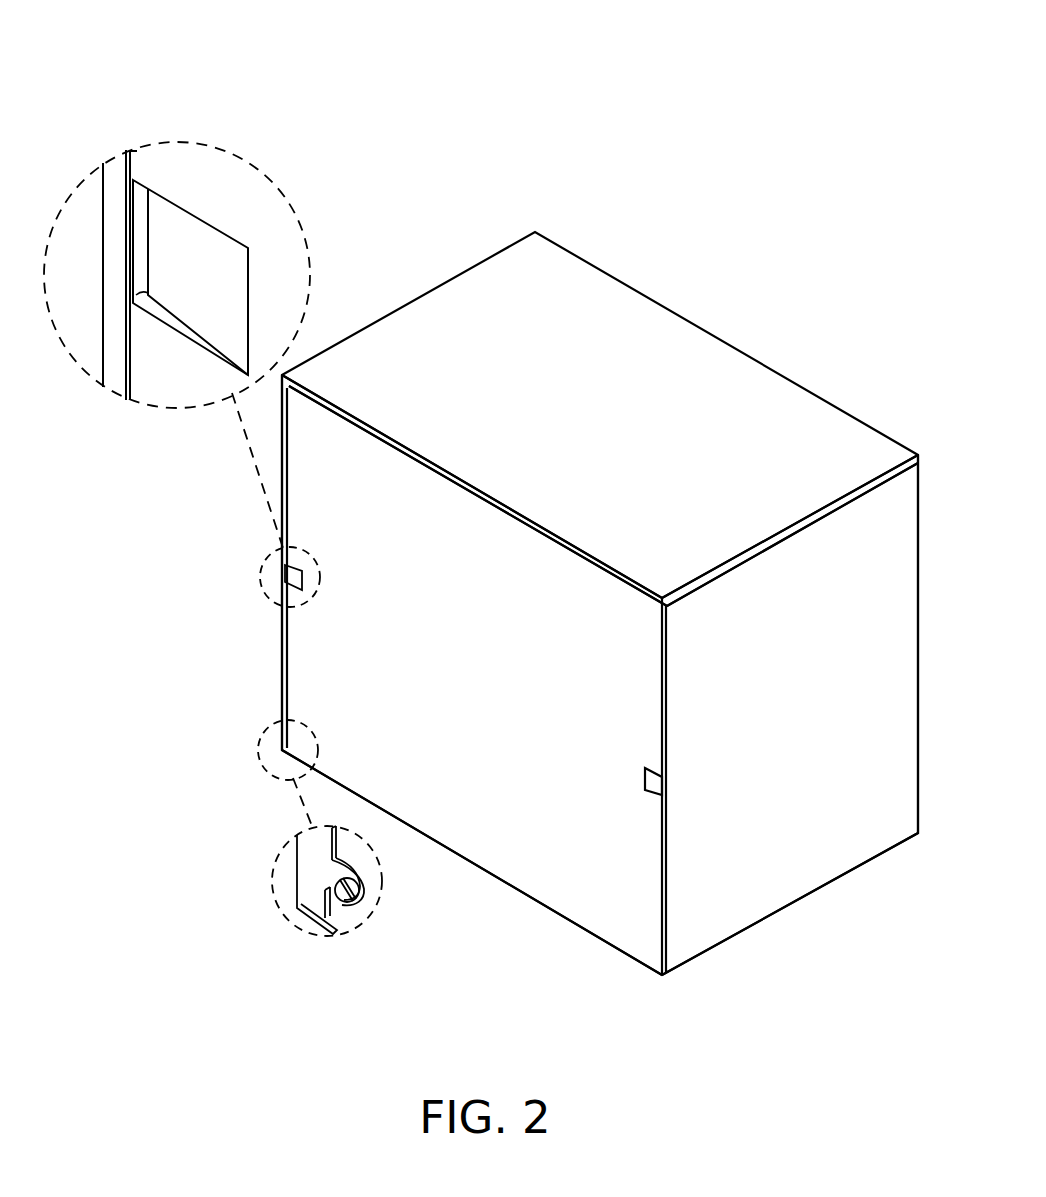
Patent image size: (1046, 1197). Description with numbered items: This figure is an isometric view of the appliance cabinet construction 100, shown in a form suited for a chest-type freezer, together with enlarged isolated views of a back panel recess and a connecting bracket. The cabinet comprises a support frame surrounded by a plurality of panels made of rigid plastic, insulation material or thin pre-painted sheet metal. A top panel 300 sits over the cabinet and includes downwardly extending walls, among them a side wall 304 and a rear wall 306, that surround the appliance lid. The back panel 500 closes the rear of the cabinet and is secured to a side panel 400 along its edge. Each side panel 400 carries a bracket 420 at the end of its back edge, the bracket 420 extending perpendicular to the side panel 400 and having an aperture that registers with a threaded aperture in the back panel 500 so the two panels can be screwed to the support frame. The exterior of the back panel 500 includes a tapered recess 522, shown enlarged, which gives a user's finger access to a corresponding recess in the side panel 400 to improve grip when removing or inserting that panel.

The appliance cabinet construction 100 is at (621, 91).
The top panel 300 is at (753, 390).
The side wall 304 is at (740, 560).
The rear wall 306 is at (478, 495).
The side panel 400 is at (730, 658).
The bracket 420 is at (365, 893).
The back panel 500 is at (418, 677).
The recess 522 is at (662, 783).